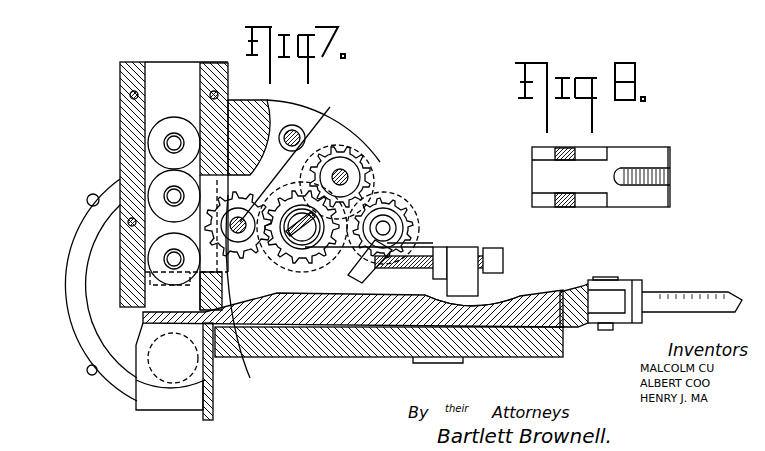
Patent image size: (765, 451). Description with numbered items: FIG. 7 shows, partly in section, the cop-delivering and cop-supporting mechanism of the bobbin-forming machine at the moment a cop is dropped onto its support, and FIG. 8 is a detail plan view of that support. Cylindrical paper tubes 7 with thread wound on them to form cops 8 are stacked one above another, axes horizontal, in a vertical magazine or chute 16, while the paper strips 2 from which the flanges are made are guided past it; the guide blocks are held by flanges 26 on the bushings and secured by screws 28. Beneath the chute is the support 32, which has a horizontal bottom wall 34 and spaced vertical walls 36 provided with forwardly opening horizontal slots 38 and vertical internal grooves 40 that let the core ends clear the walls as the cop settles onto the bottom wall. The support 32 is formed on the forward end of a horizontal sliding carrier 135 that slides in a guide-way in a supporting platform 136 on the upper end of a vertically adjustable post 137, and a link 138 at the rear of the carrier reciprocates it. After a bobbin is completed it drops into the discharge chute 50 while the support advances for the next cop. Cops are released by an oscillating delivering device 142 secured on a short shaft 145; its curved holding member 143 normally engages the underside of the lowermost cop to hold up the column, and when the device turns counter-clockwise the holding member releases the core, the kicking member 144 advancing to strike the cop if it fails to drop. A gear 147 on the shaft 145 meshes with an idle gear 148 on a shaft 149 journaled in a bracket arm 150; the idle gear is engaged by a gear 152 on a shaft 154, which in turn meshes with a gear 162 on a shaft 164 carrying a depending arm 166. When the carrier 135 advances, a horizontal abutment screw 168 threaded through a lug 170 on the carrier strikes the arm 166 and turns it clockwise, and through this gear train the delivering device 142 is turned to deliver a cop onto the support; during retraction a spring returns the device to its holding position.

In FIG. 7, the strips of paper 2 is at (166, 416).
In FIG. 7, the cylindrical paper tubes 7 is at (172, 143).
In FIG. 7, the cops 8 is at (175, 107).
In FIG. 7, the vertical magazine or chute 16 is at (111, 79).
In FIG. 7, the flanges 26 is at (112, 383).
In FIG. 7, the screws 28 is at (93, 200).
In FIG. 7, the support 32 is at (145, 325).
In FIG. 8, the support 32 is at (525, 190).
In FIG. 7, the horizontal bottom wall 34 is at (150, 336).
In FIG. 8, the horizontal bottom wall 34 is at (611, 177).
In FIG. 7, the vertical walls 36 is at (143, 311).
In FIG. 8, the vertical walls 36 is at (537, 158).
In FIG. 7, the horizontal slots 38 is at (198, 292).
In FIG. 7, the vertical internal grooves 40 is at (147, 256).
In FIG. 8, the vertical internal grooves 40 is at (560, 148).
In FIG. 7, the discharge chute 50 is at (210, 420).
In FIG. 7, the horizontal sliding carrier 135 is at (575, 292).
In FIG. 7, the supporting platform 136 is at (397, 369).
In FIG. 7, the vertically adjustable post 137 is at (455, 362).
In FIG. 7, the link 138 is at (690, 298).
In FIG. 7, the oscillating delivering device 142 is at (337, 160).
In FIG. 7, the curved holding member 143 is at (230, 278).
In FIG. 7, the kicking member 144 is at (200, 225).
In FIG. 7, the short shaft 145 is at (332, 105).
In FIG. 7, the gear 147 is at (262, 360).
In FIG. 7, the idle gear 148 is at (345, 268).
In FIG. 7, the shaft 149 is at (307, 215).
In FIG. 7, the bracket arm 150 is at (233, 223).
In FIG. 7, the gear 152 is at (345, 160).
In FIG. 7, the shaft 154 is at (347, 173).
In FIG. 7, the gear 162 is at (410, 214).
In FIG. 7, the shaft 164 is at (400, 223).
In FIG. 7, the depending arm 166 is at (420, 252).
In FIG. 7, the abutment screw 168 is at (490, 250).
In FIG. 7, the lug 170 is at (483, 283).